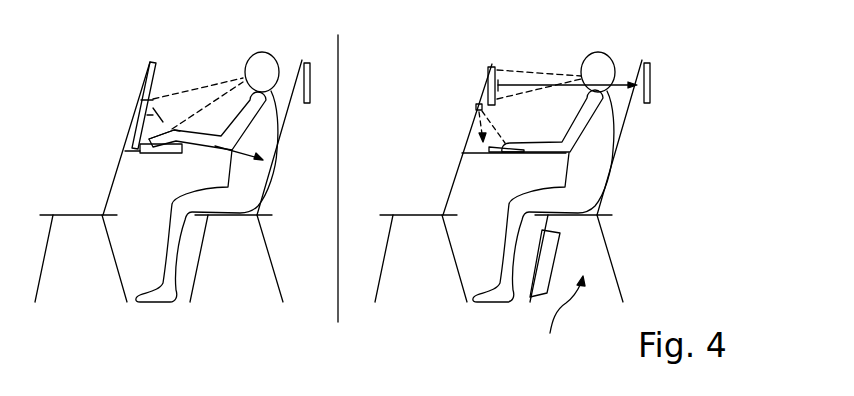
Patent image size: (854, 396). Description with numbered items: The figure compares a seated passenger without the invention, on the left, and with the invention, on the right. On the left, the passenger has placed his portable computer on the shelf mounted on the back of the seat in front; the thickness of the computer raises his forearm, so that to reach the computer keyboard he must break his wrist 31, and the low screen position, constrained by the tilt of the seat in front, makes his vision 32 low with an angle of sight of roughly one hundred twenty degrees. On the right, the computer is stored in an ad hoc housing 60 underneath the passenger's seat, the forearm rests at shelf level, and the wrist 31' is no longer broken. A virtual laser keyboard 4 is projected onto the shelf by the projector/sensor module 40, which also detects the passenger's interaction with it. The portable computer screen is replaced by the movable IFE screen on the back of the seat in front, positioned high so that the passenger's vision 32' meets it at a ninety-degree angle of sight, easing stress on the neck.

The passenger's vision 32 is at (198, 61).
The passenger's vision 32' is at (547, 51).
The wrist 31 is at (165, 110).
The wrist 31' is at (527, 125).
The projector/sensor module 40 is at (476, 106).
The keyboard 4 is at (475, 133).
The housing 60 is at (561, 319).